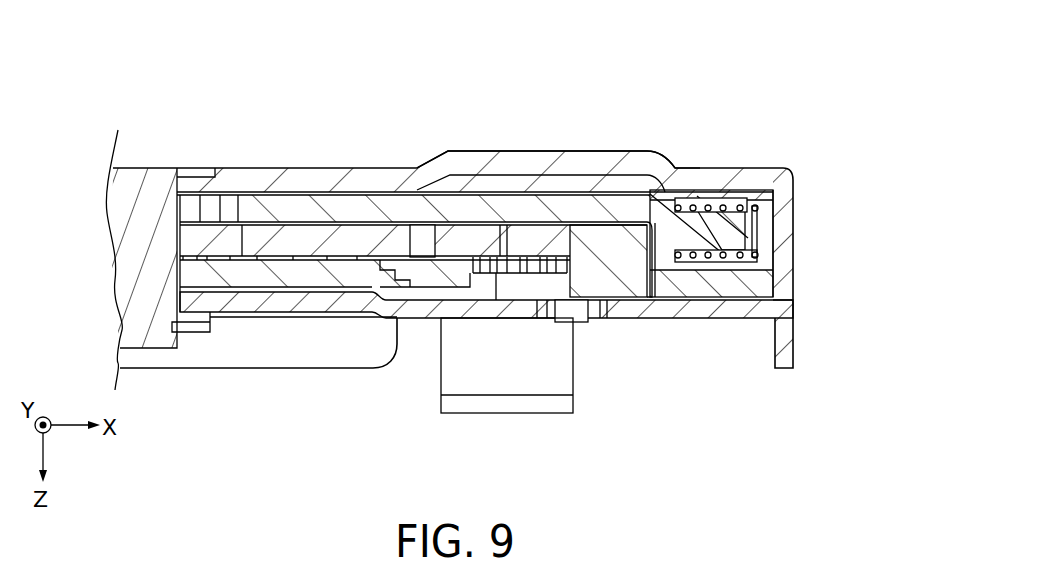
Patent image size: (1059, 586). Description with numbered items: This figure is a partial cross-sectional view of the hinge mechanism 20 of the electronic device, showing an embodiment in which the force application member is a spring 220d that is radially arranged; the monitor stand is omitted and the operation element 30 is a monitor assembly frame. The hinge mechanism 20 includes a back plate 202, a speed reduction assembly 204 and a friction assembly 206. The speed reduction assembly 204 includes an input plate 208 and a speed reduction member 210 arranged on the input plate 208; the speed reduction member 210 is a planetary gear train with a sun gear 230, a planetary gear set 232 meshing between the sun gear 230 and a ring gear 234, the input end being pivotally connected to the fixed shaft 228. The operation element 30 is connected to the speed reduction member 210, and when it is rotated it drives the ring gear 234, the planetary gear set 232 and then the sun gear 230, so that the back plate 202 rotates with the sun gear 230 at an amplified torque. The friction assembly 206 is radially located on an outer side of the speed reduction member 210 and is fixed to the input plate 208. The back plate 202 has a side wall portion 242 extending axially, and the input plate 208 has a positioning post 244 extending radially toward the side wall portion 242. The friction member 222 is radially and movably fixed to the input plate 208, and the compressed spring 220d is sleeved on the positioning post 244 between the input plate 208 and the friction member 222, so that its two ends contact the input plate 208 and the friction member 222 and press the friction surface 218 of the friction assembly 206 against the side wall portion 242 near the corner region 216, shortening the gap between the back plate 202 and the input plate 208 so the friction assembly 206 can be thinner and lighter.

The hinge mechanism 20 is at (54, 78).
The fixed shaft 228 is at (146, 213).
The sun gear 230 is at (202, 232).
The planetary gear set 232 is at (303, 247).
The back plate 202 is at (478, 165).
The input plate 208 is at (547, 207).
The speed reduction member 210 is at (544, 136).
The speed reduction assembly 204 is at (544, 111).
The ring gear 234 is at (610, 247).
The corner portion 216 is at (683, 172).
The positioning post 244 is at (723, 227).
The side wall portion 242 is at (777, 213).
The friction surface 218 is at (784, 252).
The operation element 30 is at (630, 315).
The spring 220d is at (708, 258).
The friction member 222 is at (763, 270).
The friction assembly 206 is at (723, 278).